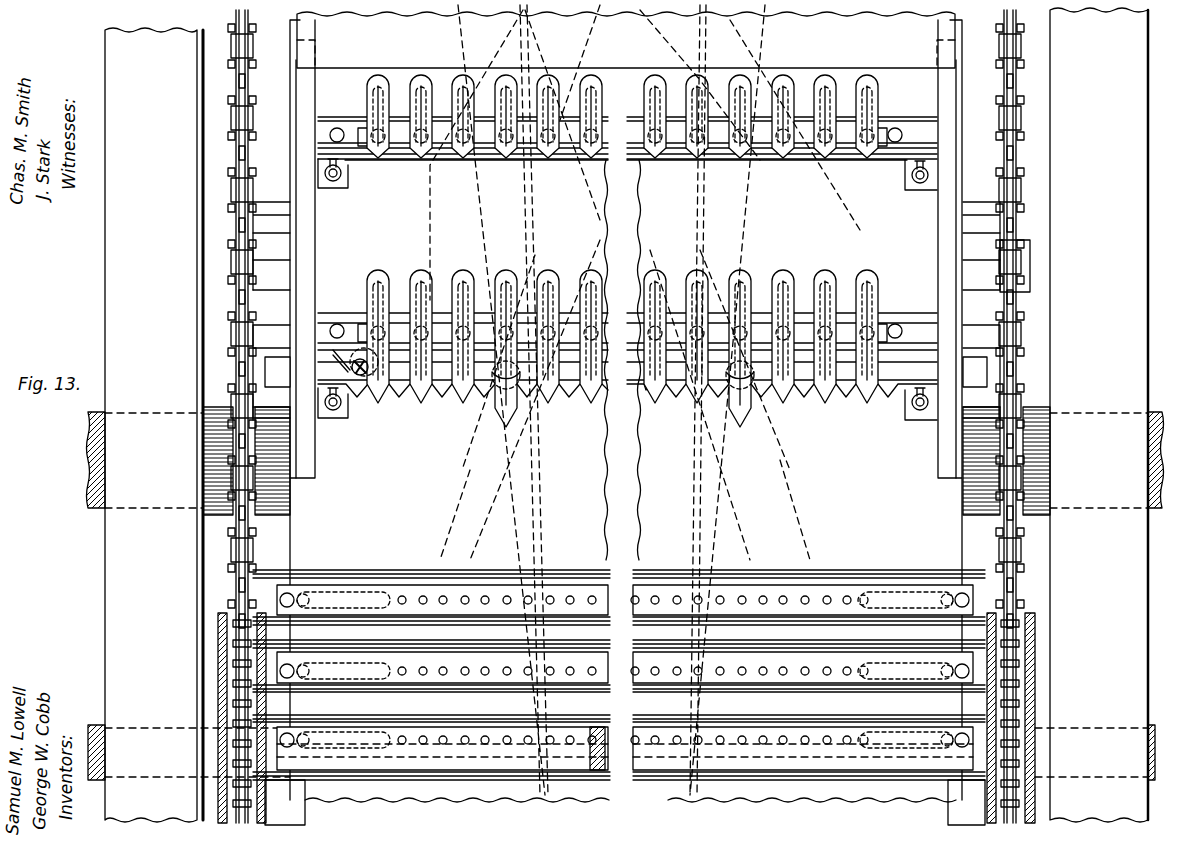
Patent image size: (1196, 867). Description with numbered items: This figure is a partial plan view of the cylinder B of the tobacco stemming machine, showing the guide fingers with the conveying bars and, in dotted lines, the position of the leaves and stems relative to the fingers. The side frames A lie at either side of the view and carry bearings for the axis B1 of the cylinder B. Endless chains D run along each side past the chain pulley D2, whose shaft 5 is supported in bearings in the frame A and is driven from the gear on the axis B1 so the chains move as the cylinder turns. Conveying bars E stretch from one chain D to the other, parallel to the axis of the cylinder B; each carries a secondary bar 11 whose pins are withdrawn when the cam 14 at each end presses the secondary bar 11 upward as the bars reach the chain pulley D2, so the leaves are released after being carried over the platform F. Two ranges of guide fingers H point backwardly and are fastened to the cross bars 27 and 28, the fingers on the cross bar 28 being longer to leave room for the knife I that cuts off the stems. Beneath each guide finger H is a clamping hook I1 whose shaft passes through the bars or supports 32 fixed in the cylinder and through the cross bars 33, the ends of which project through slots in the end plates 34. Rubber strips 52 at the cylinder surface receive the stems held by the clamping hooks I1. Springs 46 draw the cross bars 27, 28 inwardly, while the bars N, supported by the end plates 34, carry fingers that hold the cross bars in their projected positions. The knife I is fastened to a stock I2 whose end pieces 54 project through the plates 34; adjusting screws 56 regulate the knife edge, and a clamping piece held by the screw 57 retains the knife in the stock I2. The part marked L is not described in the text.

The side frames A is at (626, 415).
The cylinder B is at (626, 411).
The axis of the cylinder B1 is at (622, 461).
The endless chains D is at (622, 416).
The chain pulley D2 is at (218, 650).
The conveying bars E is at (372, 580).
The platform F is at (626, 40).
The guide fingers H is at (622, 239).
The knife I is at (495, 410).
The clamping hook I1 is at (372, 98).
The knife stock I2 is at (566, 395).
The bracket L is at (626, 339).
The bars N is at (626, 300).
The shaft 5 is at (214, 738).
The secondary bar 11 is at (440, 582).
The cam 14 is at (625, 802).
The cross bar 27 is at (500, 162).
The cross bar 28 is at (440, 388).
The bars or supports 32 is at (452, 122).
The cross bars 33 is at (1066, 338).
The plates 34 is at (624, 269).
The springs 46 is at (338, 182).
The rubber strips 52 is at (712, 175).
The end pieces 54 is at (626, 372).
The adjusting screws 56 is at (506, 390).
The screw 57 is at (372, 376).